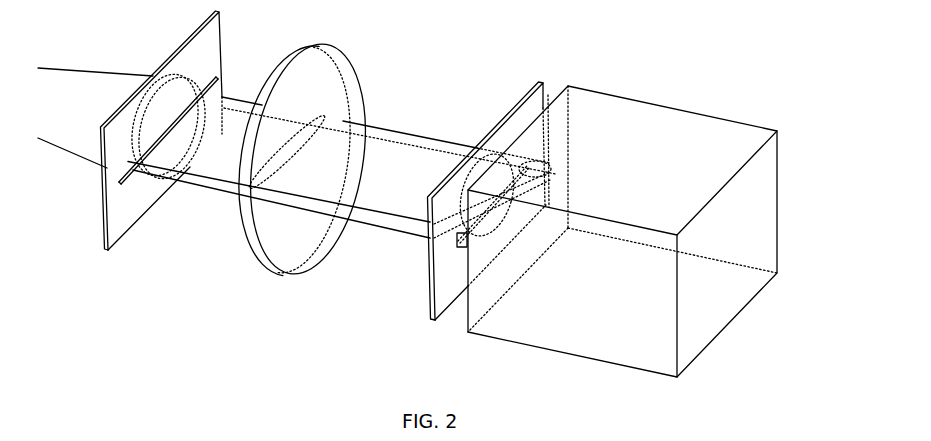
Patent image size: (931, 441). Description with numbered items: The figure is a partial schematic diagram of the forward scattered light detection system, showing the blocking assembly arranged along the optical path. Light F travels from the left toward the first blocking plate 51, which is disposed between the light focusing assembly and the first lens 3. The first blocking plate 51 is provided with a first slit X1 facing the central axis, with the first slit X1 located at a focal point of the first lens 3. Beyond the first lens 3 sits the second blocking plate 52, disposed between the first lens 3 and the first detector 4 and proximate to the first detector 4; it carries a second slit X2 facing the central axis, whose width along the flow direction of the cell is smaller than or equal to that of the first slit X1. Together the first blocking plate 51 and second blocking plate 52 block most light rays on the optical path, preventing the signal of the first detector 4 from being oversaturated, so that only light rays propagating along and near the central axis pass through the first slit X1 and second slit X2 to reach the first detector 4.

The light flux F is at (110, 58).
The first blocking plate 51 is at (207, 47).
The first slit X1 is at (125, 178).
The first lens 3 is at (323, 81).
The second blocking plate 52 is at (525, 118).
The second slit X2 is at (460, 248).
The first detector 4 is at (677, 140).